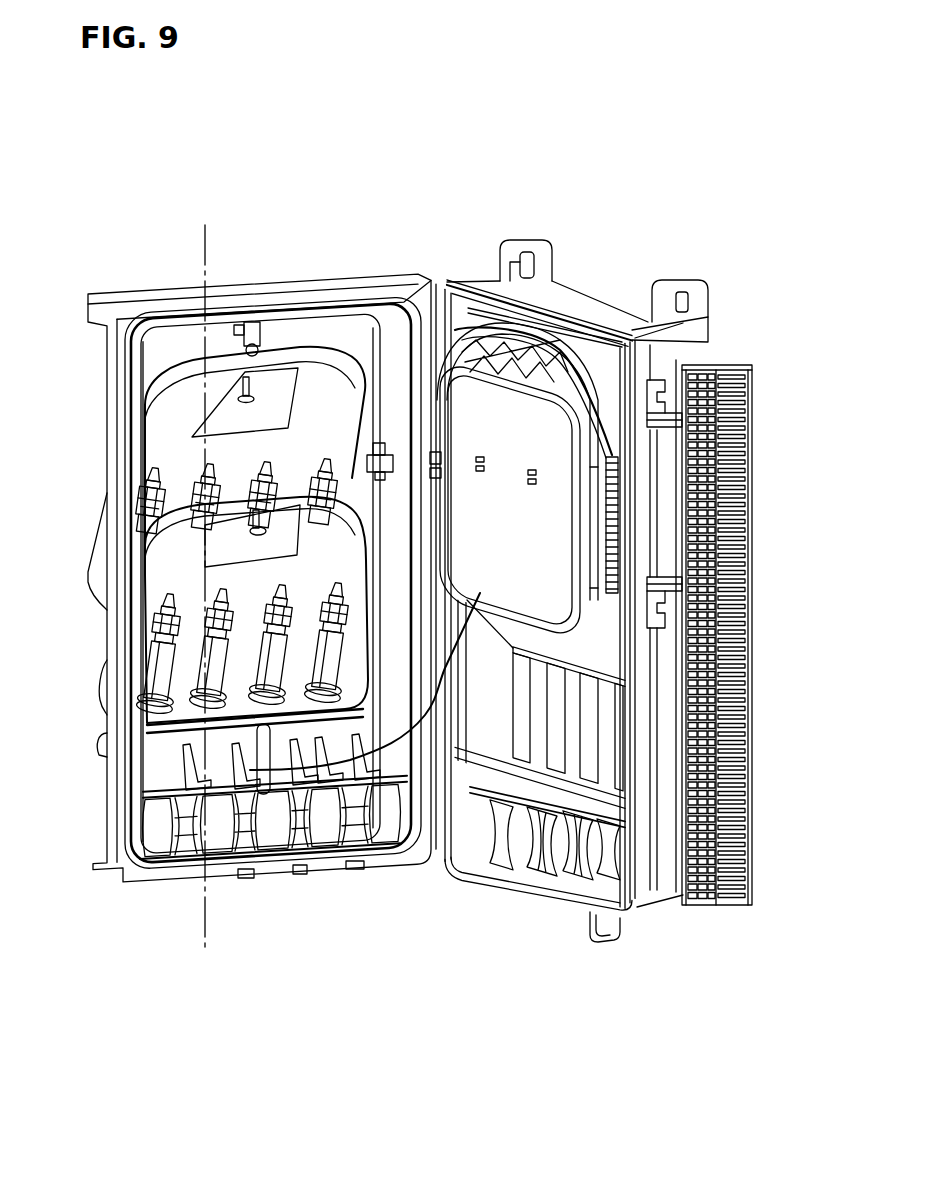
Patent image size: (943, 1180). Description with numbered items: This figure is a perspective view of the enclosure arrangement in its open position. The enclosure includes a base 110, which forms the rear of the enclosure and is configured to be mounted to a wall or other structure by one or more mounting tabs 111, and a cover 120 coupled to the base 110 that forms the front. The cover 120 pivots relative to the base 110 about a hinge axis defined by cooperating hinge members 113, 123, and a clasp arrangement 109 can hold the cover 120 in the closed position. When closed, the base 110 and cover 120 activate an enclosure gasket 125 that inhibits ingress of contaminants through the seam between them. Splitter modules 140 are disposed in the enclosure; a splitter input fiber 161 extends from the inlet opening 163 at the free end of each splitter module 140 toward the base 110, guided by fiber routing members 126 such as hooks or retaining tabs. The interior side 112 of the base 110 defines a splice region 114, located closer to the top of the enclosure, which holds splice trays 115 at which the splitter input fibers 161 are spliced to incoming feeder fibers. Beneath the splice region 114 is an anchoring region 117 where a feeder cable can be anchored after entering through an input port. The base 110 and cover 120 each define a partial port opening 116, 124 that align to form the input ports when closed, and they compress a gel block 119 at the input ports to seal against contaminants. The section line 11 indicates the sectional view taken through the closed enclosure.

The section line 11- 11 is at (200, 252).
The clasp arrangement 109 is at (758, 418).
The base 110 is at (598, 280).
The mounting tabs 111 is at (525, 240).
The interior side 112 is at (512, 704).
The hinge member 113 is at (440, 456).
The splice region 114 is at (607, 624).
The splice tray 115 is at (521, 575).
The partial port opening 116 is at (560, 890).
The anchoring region 117 is at (562, 758).
The gel block 119 is at (588, 850).
The cover 120 is at (338, 268).
The hinge member 123 is at (437, 705).
The partial port opening 124 is at (353, 866).
The enclosure gasket 125 is at (133, 363).
The fiber routing members 126 is at (262, 331).
The splitter module 140 is at (343, 418).
The splitter input fiber 161 is at (170, 765).
The inlet opening 163 is at (240, 397).